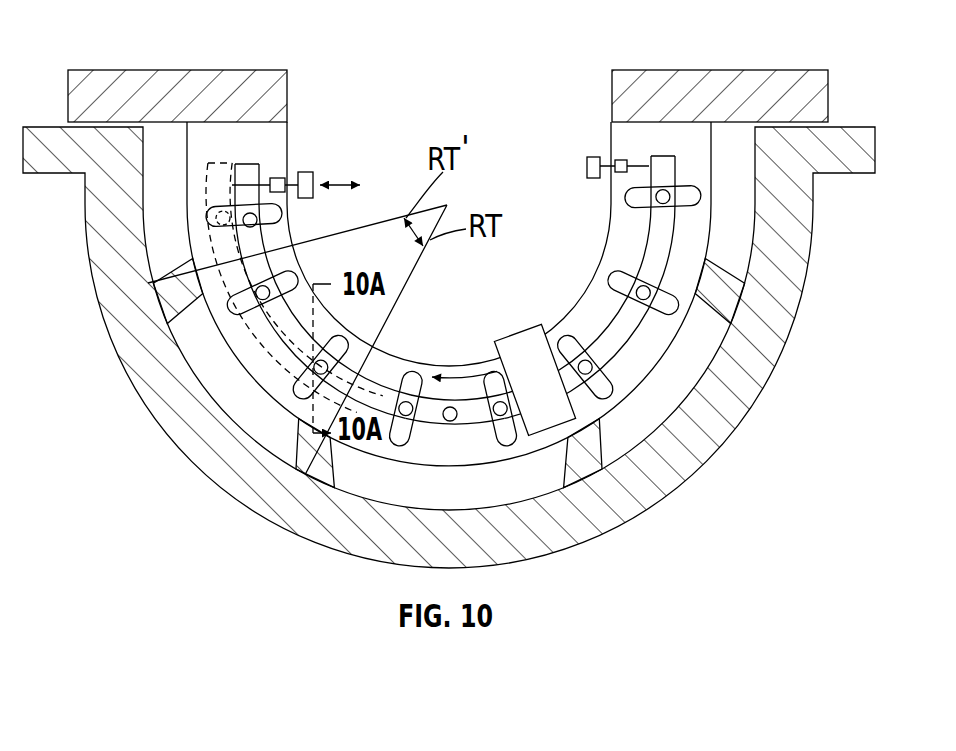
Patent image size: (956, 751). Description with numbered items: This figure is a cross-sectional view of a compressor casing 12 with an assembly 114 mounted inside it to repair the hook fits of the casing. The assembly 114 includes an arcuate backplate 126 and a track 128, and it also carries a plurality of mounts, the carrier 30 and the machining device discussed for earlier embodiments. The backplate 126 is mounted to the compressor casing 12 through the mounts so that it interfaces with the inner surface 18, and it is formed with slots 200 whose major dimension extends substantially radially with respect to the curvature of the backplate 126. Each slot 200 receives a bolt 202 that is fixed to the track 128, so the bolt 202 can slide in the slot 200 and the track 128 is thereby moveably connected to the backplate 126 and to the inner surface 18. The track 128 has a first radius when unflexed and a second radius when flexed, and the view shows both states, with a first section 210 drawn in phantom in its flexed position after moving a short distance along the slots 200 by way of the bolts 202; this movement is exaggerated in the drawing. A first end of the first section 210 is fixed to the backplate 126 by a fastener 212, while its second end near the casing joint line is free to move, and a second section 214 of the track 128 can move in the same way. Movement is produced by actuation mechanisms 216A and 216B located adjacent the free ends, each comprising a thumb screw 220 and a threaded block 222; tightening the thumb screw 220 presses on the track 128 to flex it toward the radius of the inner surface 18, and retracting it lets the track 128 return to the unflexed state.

The compressor casing 12 is at (587, 517).
The inner surface 18 is at (453, 507).
The carrier 30 is at (540, 333).
The assembly 114 is at (578, 121).
The backplate 126 is at (388, 370).
The track 128 is at (450, 406).
The slots 200 is at (280, 219).
The bolt 202 is at (247, 212).
The first section 210 is at (220, 249).
The fastener 212 is at (450, 421).
The second section 214 is at (669, 259).
The actuation mechanism 216A is at (306, 172).
The actuation mechanism 216B is at (588, 165).
The thumb screw 220 is at (314, 180).
The threaded block 222 is at (284, 191).